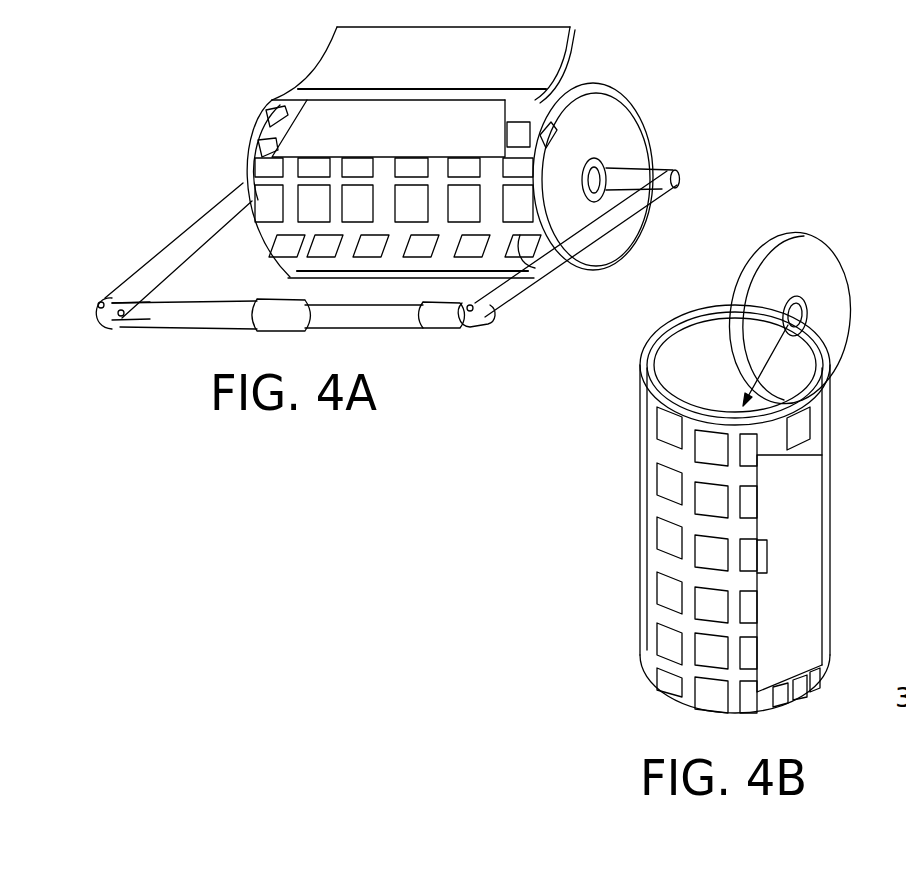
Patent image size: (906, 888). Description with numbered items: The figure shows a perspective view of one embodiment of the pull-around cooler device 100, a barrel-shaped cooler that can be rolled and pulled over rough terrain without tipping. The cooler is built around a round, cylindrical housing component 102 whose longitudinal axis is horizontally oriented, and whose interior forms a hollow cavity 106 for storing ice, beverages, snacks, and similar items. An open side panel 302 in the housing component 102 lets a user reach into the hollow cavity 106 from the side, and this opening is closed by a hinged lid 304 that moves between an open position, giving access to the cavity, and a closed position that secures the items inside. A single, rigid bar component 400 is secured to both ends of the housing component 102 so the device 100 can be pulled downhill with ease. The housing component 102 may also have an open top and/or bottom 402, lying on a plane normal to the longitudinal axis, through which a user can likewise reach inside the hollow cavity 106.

In FIG. 4A, the pull-around cooler device 100 is at (235, 100).
In FIG. 4A, the housing component 102 is at (540, 273).
In FIG. 4B, the housing component 102 is at (654, 609).
In FIG. 4A, the hollow cavity 106 is at (483, 125).
In FIG. 4A, the open side panel 302 is at (537, 98).
In FIG. 4A, the hinged lid 304 is at (353, 53).
In FIG. 4B, the hinged lid 304 is at (818, 269).
In FIG. 4A, the rigid bar component 400 is at (486, 311).
In FIG. 4B, the open top and/or bottom 402 is at (808, 311).